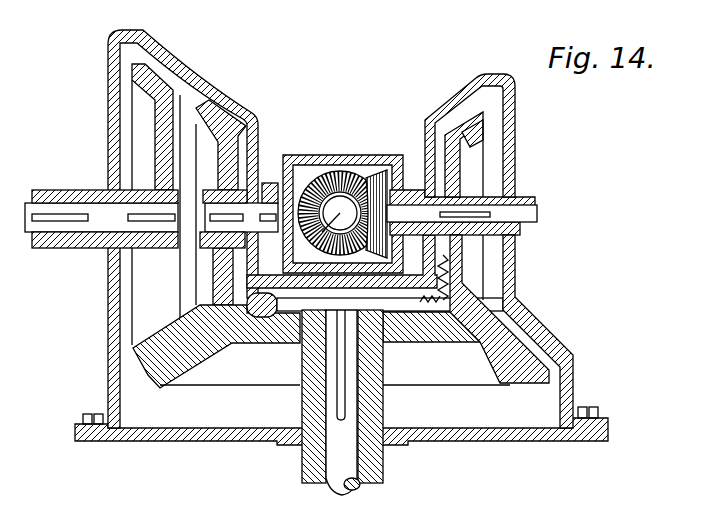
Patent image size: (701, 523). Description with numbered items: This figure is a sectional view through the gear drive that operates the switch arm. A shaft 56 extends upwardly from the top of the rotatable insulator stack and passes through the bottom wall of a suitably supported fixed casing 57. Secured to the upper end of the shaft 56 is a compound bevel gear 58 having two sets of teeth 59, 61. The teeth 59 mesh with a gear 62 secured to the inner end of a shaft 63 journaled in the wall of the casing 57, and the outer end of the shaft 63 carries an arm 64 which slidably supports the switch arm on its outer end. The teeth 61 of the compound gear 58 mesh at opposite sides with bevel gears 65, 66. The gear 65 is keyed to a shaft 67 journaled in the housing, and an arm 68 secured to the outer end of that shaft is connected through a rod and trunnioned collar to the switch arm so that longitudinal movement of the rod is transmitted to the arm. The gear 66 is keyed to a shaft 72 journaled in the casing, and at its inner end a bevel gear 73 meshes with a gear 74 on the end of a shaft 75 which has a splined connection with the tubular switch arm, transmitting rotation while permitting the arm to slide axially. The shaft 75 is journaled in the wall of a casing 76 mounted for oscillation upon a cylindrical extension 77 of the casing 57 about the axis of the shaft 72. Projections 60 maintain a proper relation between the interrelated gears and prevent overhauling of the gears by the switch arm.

The shaft 56 is at (333, 456).
The fixed casing 57 is at (457, 437).
The compound bevel gear 58 is at (440, 362).
The teeth 59 is at (507, 353).
The projections 60 is at (237, 108).
The teeth 61 is at (483, 317).
The gear 62 is at (160, 273).
The shaft 63 is at (97, 213).
The arm 64 is at (46, 190).
The bevel gear 65 is at (217, 112).
The bevel gear 66 is at (463, 120).
The shaft 67 is at (240, 213).
The arm 68 is at (285, 172).
The shaft 72 is at (512, 210).
The bevel gear 73 is at (386, 173).
The gear 74 is at (344, 172).
The shaft 75 is at (290, 253).
The casing 76 is at (405, 165).
The cylindrical extension 77 is at (420, 245).